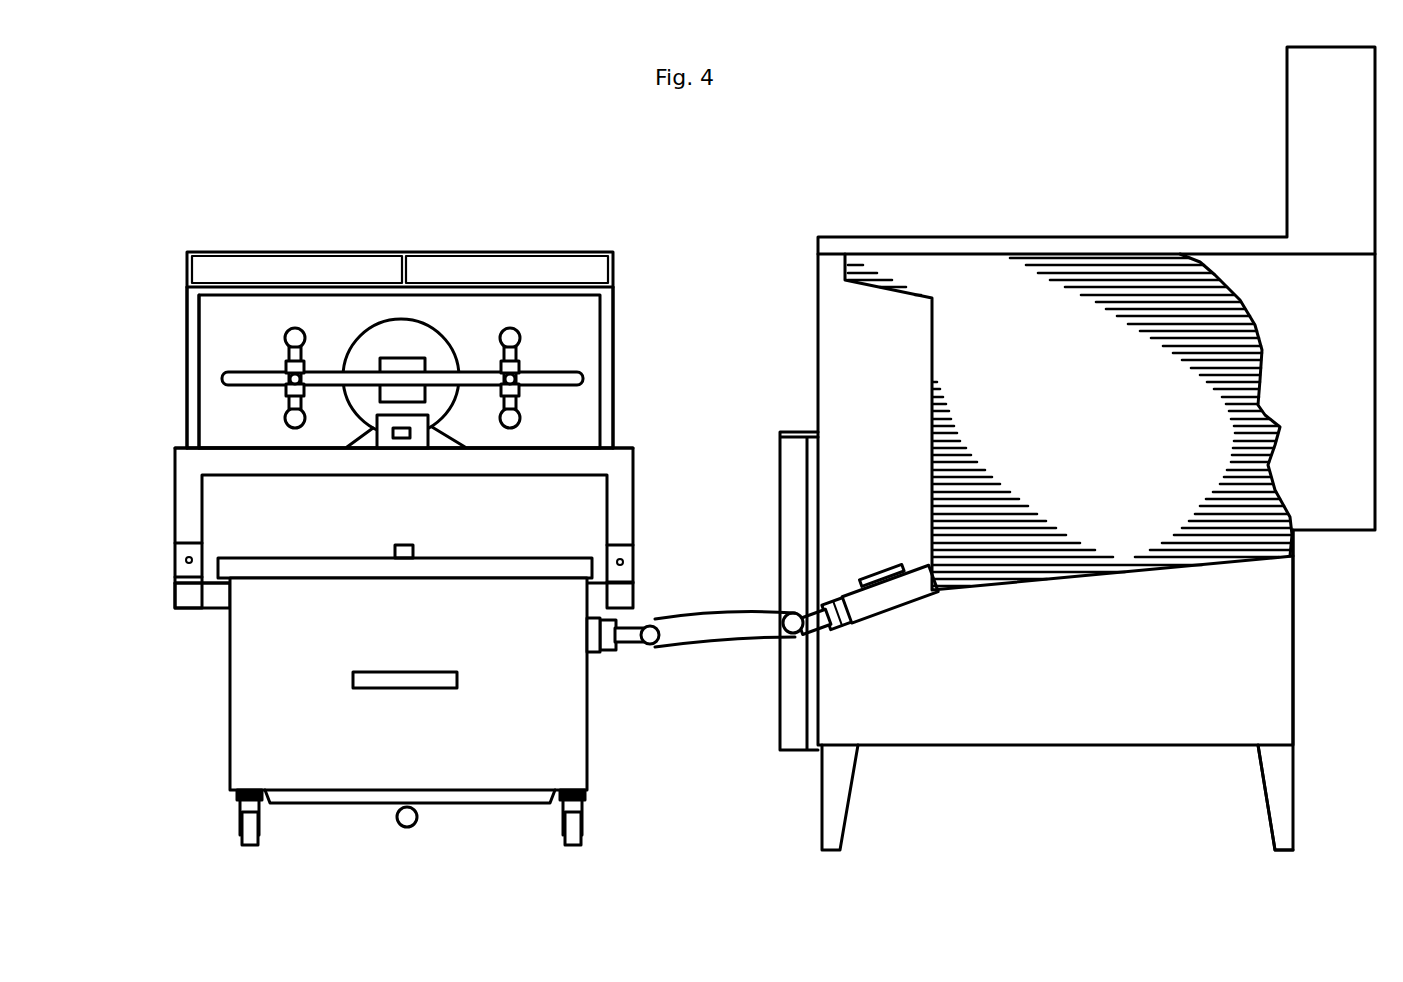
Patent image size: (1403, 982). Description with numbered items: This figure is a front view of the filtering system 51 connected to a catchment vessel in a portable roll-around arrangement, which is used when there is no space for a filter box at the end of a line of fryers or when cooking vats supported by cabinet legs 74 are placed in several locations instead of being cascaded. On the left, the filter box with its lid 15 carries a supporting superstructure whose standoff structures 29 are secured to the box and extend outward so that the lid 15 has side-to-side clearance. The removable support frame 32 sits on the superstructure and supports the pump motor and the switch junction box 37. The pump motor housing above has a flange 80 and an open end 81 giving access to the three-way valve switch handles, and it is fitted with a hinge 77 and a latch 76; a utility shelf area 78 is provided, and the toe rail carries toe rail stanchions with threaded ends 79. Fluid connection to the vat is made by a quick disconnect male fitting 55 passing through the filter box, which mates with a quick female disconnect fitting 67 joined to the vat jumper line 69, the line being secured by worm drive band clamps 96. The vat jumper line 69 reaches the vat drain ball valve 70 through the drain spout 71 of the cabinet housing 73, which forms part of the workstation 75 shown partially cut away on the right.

The lid 15 is at (440, 557).
The standoff structure 29 is at (213, 610).
The removable support frame 32 is at (184, 515).
The switch junction box 37 is at (398, 446).
The filtering system 51 is at (389, 826).
The quick disconnect male fitting 55 is at (595, 655).
The quick female disconnect fitting 67 is at (612, 655).
The vat jumper line 69 is at (703, 632).
The vat drain ball valve 70 is at (862, 572).
The drain spout 71 is at (915, 590).
The cabinet housing 73 is at (993, 310).
The cabinet legs 74 is at (1260, 780).
The workstation 75 is at (1300, 632).
The latch 76 is at (615, 447).
The hinge 77 is at (189, 438).
The utility shelf area 78 is at (268, 275).
The toe rail stanchions with threaded ends 79 is at (497, 250).
The flange 80 is at (617, 333).
The open end 81 is at (228, 332).
The worm drive band clamps 96 is at (625, 657).